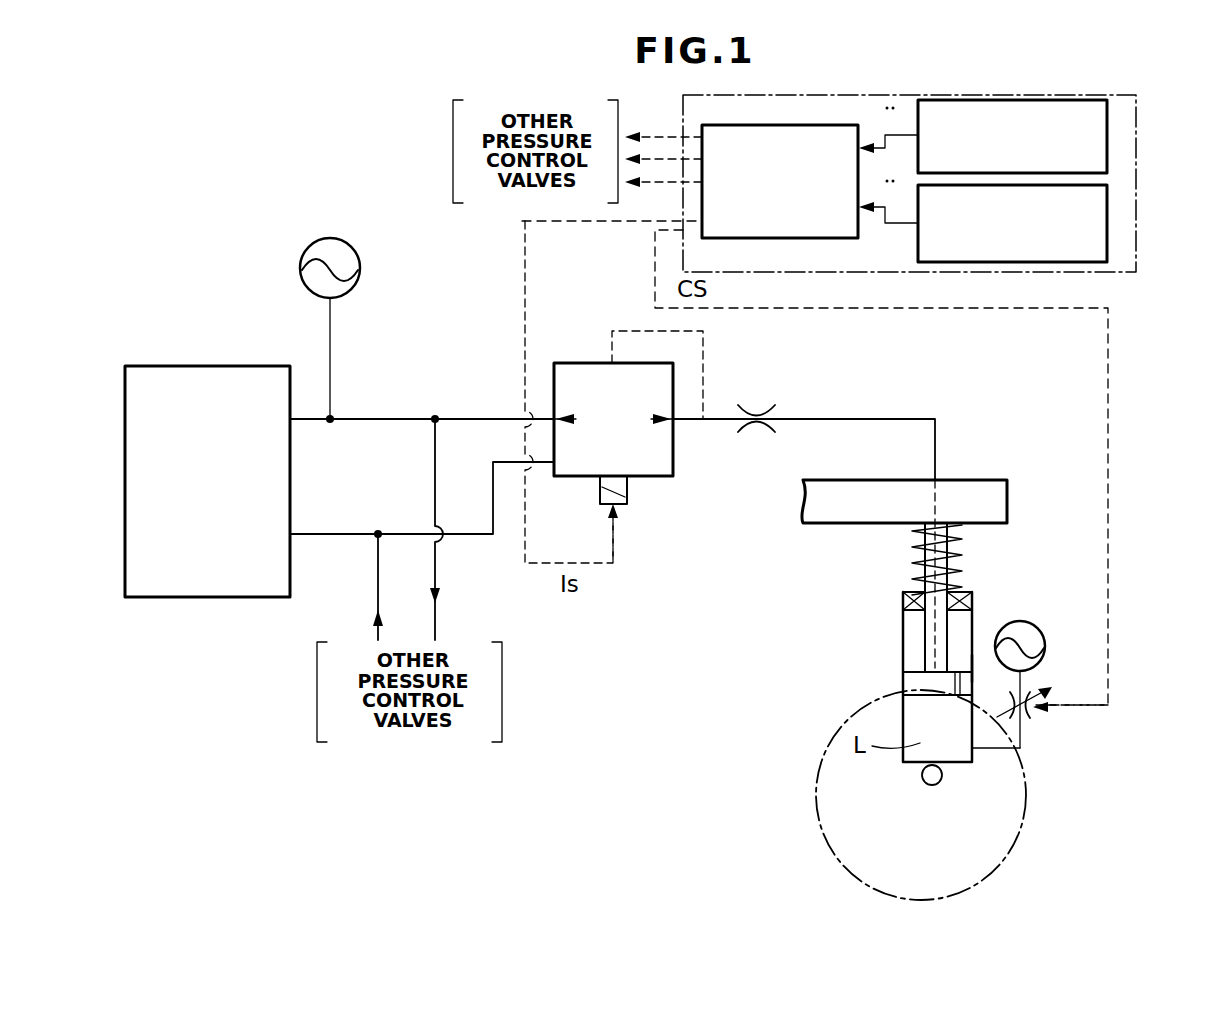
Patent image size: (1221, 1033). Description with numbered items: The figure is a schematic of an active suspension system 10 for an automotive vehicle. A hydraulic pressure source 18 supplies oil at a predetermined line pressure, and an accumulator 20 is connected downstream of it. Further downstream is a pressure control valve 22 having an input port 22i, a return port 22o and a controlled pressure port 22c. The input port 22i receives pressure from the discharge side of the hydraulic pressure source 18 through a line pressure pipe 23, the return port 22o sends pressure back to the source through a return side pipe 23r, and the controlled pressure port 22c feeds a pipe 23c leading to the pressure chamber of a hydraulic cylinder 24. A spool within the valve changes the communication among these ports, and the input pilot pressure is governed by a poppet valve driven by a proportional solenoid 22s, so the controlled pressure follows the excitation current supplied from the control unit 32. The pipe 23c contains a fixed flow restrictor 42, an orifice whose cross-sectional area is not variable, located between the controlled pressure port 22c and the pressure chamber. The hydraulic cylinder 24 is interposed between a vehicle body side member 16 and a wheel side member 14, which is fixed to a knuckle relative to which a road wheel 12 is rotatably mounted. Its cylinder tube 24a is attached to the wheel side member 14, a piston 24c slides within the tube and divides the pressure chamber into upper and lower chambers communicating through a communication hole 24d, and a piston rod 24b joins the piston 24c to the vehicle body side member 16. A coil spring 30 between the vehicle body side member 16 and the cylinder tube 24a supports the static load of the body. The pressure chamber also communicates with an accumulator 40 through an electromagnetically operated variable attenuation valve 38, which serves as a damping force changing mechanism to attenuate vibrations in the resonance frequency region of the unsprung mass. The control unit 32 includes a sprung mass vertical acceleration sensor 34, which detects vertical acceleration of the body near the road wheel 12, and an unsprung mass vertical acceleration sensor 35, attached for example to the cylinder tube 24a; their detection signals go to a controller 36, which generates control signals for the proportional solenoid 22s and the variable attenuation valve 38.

The active suspension system 10 is at (628, 661).
The road wheel 12 is at (815, 795).
The road wheel side member 14 is at (942, 781).
The vehicle body side member 16 is at (978, 480).
The hydraulic pressure source 18 is at (228, 366).
The accumulator 20 is at (354, 252).
The pressure control valve 22 is at (586, 363).
The input port 22i is at (553, 417).
The return port 22o is at (554, 463).
The controlled pressure port 22c is at (673, 420).
The proportional solenoid 22s is at (627, 497).
The line pressure pipe 23 is at (383, 419).
The return side pipe 23r is at (472, 538).
The pipe 23c is at (900, 418).
The hydraulic cylinder 24 is at (900, 648).
The cylinder tube 24a is at (900, 621).
The piston rod 24b is at (922, 556).
The piston 24c is at (912, 682).
The communication hole 24d is at (978, 668).
The coil spring 30 is at (953, 537).
The control unit 32 is at (903, 93).
The sprung mass vertical acceleration sensor 34 is at (1108, 140).
The unsprung mass vertical acceleration sensor 35 is at (1108, 226).
The controller 36 is at (800, 240).
The electromagnetically operated variable attenuation valve 38 is at (1030, 717).
The accumulator 40 is at (1043, 640).
The fixed flow restrictor 42 is at (767, 410).